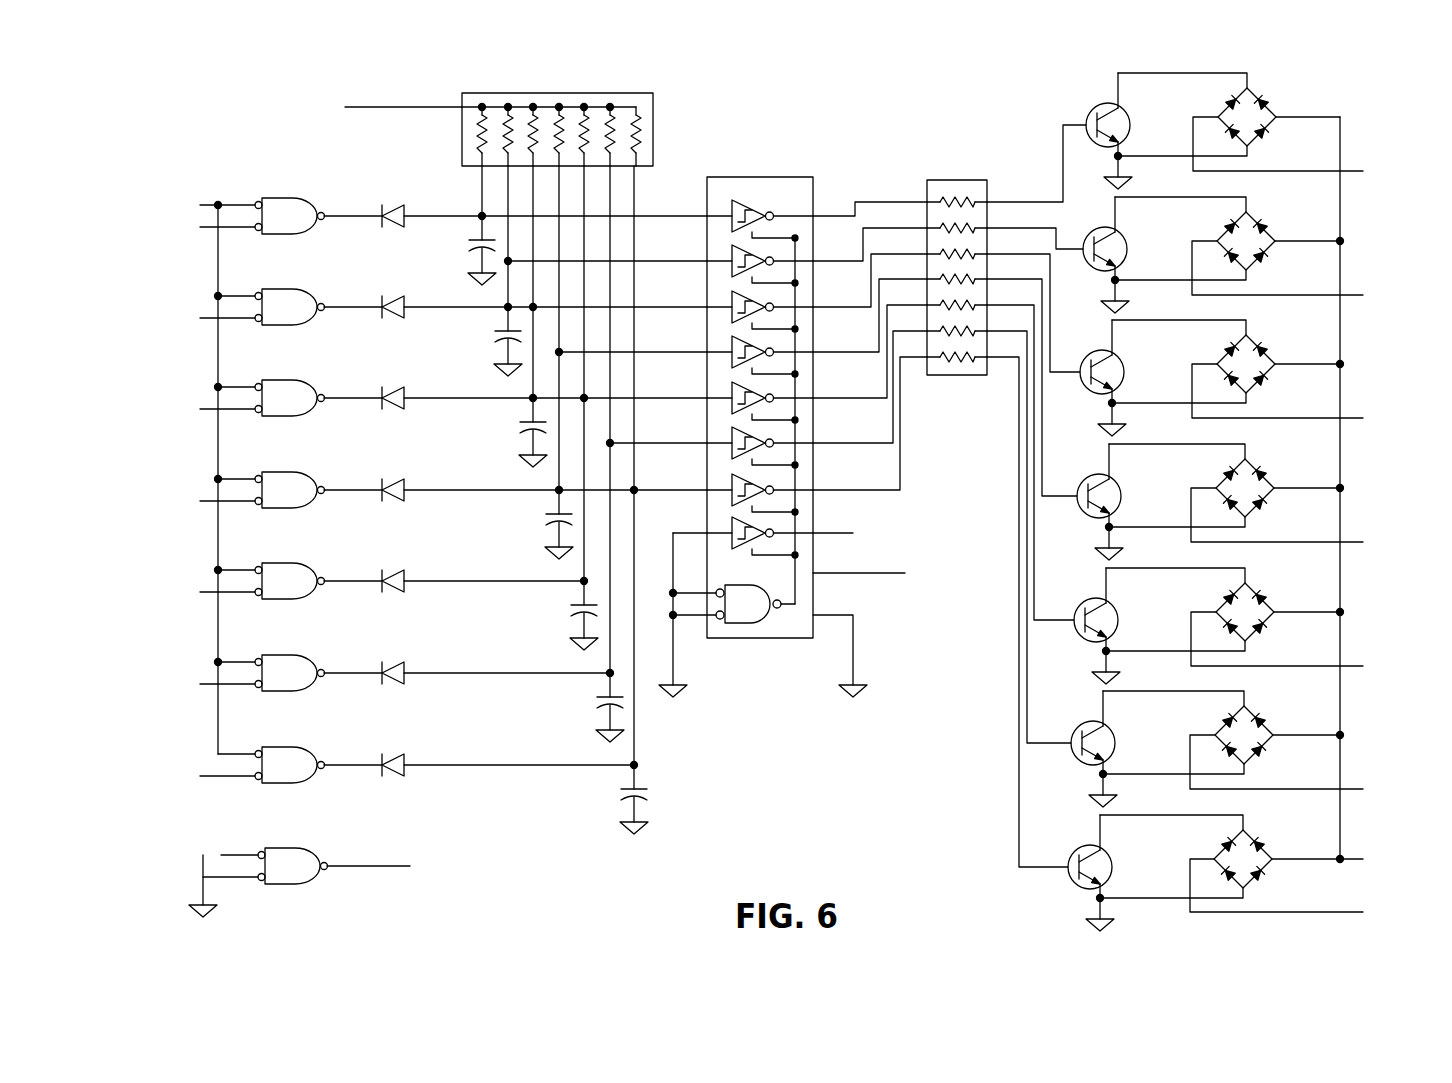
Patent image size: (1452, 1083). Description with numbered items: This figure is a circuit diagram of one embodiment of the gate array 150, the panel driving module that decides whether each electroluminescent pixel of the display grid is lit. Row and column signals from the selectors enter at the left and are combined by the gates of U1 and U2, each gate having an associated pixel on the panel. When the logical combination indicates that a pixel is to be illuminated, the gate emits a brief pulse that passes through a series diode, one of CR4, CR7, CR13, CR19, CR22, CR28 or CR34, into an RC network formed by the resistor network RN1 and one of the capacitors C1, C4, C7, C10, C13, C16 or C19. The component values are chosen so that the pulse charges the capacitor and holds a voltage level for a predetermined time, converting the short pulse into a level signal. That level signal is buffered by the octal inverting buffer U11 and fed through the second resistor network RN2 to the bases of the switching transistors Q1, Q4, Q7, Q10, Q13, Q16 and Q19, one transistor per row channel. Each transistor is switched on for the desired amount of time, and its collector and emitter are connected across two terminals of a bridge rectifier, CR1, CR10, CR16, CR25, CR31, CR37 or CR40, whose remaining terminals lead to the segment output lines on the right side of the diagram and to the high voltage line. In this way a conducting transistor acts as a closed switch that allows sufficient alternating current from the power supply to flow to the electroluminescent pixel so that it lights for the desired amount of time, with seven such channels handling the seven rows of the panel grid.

The gate array 150 is at (830, 762).
The 74HC7540 octal inverting buffer U11 is at (759, 386).
The RC circuit resistor network RN1 is at (540, 139).
The resistor network 47K x 7 RN2 is at (962, 257).
The capacitor CR4 is at (392, 218).
The 1N4148 diode CR7 is at (392, 309).
The 1N4148 diode CR13 is at (392, 400).
The 1N4148 diode CR19 is at (392, 492).
The 1N4148 diode CR22 is at (392, 583).
The 1N4148 diode CR28 is at (392, 675).
The 1N4148 diode CR34 is at (392, 767).
The 0.22 capacitor C1 is at (473, 250).
The capacitor C4 is at (499, 341).
The 0.22 capacitor C7 is at (524, 432).
The 0.22 capacitor C10 is at (546, 524).
The 0.22 capacitor C13 is at (571, 615).
The 0.22 capacitor C16 is at (597, 707).
The 0.22 capacitor C19 is at (621, 799).
The transistor Q1 is at (1137, 131).
The ZTX458 transistor Q4 is at (1134, 255).
The ZTX458 transistor Q7 is at (1131, 378).
The ZTX458 transistor Q10 is at (1128, 502).
The ZTX458 transistor Q13 is at (1125, 626).
The ZTX458 transistor Q16 is at (1122, 749).
The ZTX458 transistor Q19 is at (1119, 873).
The W08G bridge rectifier CR1 is at (1263, 115).
The W08G bridge rectifier CR10 is at (1262, 239).
The W08G bridge rectifier CR16 is at (1262, 362).
The W08G bridge rectifier CR25 is at (1261, 486).
The W08G bridge rectifier CR31 is at (1261, 610).
The W08G bridge rectifier CR37 is at (1260, 733).
The W08G bridge rectifier CR40 is at (1259, 857).